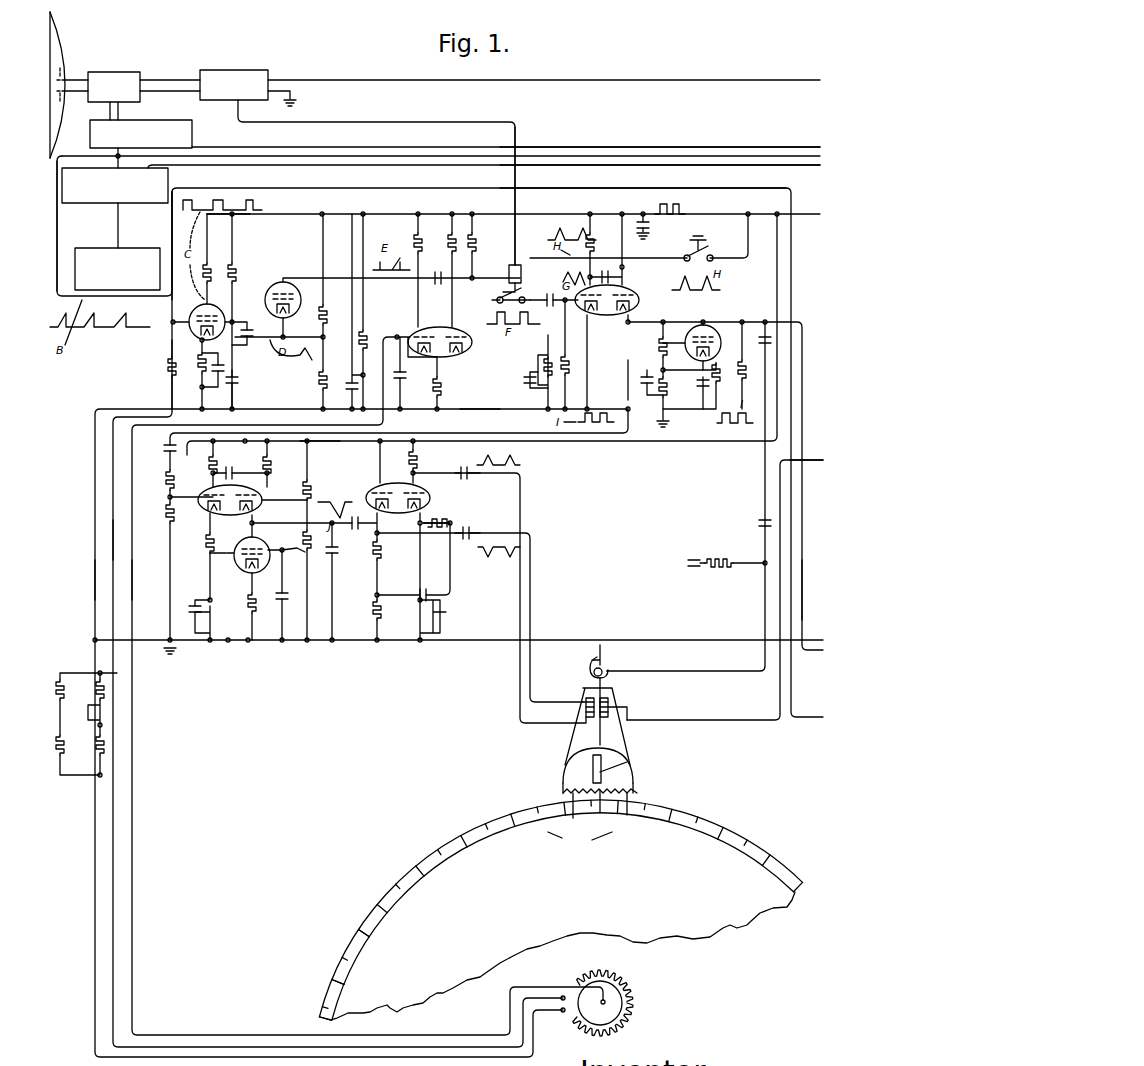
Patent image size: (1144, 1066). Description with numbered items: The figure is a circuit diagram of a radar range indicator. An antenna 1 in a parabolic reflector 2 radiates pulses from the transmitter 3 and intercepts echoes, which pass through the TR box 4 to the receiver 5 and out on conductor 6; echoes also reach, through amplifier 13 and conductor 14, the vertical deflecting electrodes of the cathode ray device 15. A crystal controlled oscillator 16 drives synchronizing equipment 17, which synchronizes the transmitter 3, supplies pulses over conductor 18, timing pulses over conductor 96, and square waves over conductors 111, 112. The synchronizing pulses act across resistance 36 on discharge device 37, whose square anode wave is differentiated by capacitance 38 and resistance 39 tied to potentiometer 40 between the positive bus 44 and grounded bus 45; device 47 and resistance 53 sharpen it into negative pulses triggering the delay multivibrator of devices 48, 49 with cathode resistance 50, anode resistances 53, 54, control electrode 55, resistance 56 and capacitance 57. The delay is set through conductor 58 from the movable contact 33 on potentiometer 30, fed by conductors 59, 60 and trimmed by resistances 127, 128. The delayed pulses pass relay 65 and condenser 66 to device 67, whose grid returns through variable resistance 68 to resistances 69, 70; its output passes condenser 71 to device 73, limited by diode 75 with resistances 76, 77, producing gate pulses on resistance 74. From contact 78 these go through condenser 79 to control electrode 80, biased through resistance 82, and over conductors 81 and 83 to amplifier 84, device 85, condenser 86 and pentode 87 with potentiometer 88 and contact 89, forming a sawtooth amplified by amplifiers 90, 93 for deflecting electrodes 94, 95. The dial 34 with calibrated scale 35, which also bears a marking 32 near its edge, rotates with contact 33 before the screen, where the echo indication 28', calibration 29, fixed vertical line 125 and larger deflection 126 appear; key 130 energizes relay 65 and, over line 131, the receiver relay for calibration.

The antenna 1 is at (58, 100).
The parabolic reflector 2 is at (62, 42).
The transmitter 3 is at (160, 120).
The TR box 4 is at (115, 72).
The receiver 5 is at (234, 70).
The conductor 6 is at (792, 80).
The amplifier 13 is at (171, 214).
The conductor 14 is at (813, 459).
The cathode ray device 15 is at (622, 748).
The crystal controlled oscillator 16 is at (136, 252).
The synchronizing equipment 17 is at (100, 205).
The conductor 18 is at (56, 231).
The echo indication 28' is at (626, 760).
The calibration 29 is at (632, 795).
The potentiometer 30 is at (628, 990).
The dial scale mark 32 is at (346, 993).
The movable contact 33 is at (597, 1007).
The dial 34 is at (443, 852).
The calibrated scale 35 is at (580, 842).
The resistance 36 is at (168, 366).
The discharge device 37 is at (200, 306).
The capacitance 38 is at (240, 365).
The resistance 39 is at (293, 336).
The potentiometer 40 is at (326, 336).
The positive bus 44 is at (290, 213).
The grounded bus 45 is at (472, 408).
The discharge device 47 is at (280, 288).
The electron discharge device 48 is at (415, 334).
The electron discharge device 49 is at (470, 337).
The resistance 50 is at (442, 384).
The resistance 53 is at (414, 238).
The resistance 54 is at (450, 240).
The control electrode 55 is at (450, 330).
The resistance 56 is at (476, 241).
The capacitance 57 is at (438, 272).
The conductor 58 is at (132, 602).
The conductor 59 is at (111, 542).
The conductor 60 is at (93, 592).
The relay 65 is at (512, 265).
The condenser 66 is at (550, 292).
The discharge device 67 is at (568, 312).
The variable resistance 68 is at (567, 377).
The resistance 69 is at (545, 347).
The resistance 70 is at (525, 375).
The condenser 71 is at (603, 270).
The discharge device 73 is at (632, 296).
The resistance 74 is at (750, 365).
The diode 75 is at (695, 336).
The resistance 76 is at (673, 387).
The resistance 77 is at (693, 386).
The variable contact 78 is at (763, 343).
The condenser 79 is at (759, 523).
The control electrode 80 is at (606, 665).
The conductor 81 is at (803, 618).
The resistance 82 is at (727, 572).
The conductor 83 is at (627, 386).
The amplifier 84 is at (206, 492).
The discharge device 85 is at (260, 492).
The condenser 86 is at (336, 556).
The pentode 87 is at (245, 546).
The potentiometer 88 is at (295, 538).
The contact 89 is at (300, 556).
The amplifier 90 is at (378, 488).
The amplifier 93 is at (430, 485).
The right hand deflecting electrode 94 is at (610, 702).
The left hand deflecting electrode 95 is at (585, 708).
The conductor 96 is at (772, 172).
The conductor 111 is at (784, 147).
The conductor 112 is at (805, 160).
The fixed vertical line 125 is at (570, 760).
The larger deflection 126 is at (606, 782).
The resistances 127 is at (60, 708).
The resistances 128 is at (95, 700).
The key 130 is at (700, 248).
The line 131 is at (516, 136).